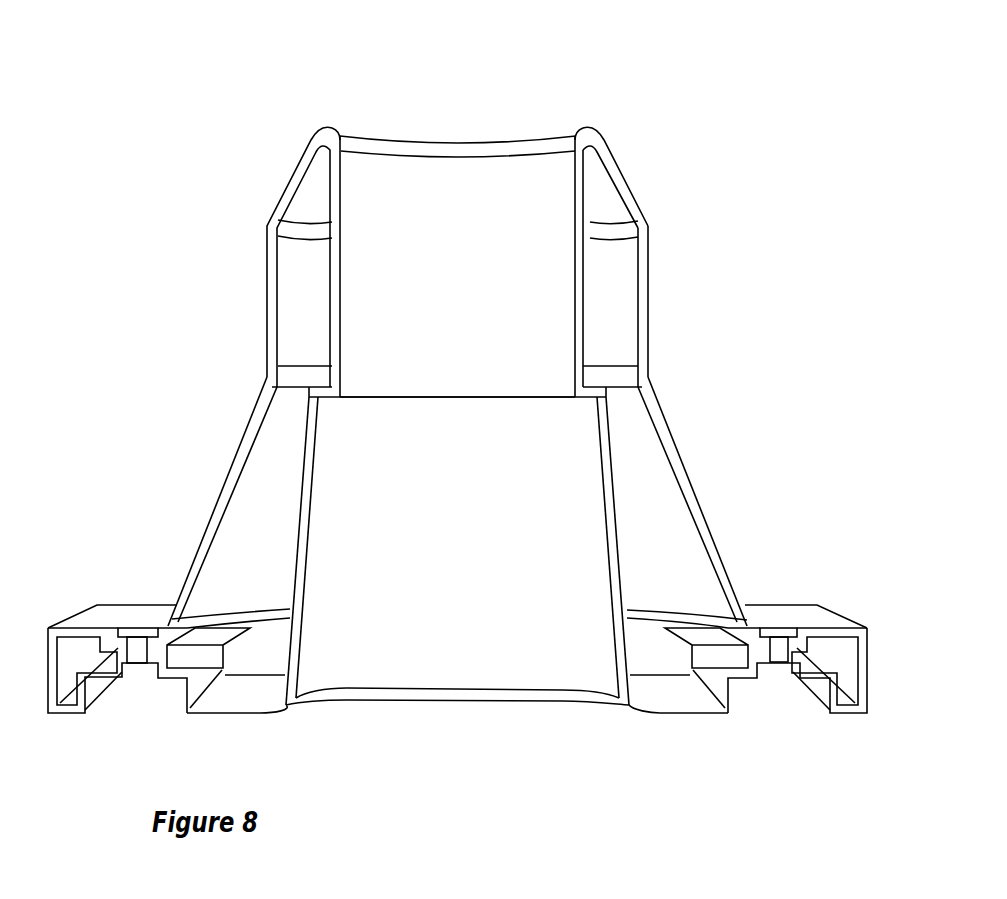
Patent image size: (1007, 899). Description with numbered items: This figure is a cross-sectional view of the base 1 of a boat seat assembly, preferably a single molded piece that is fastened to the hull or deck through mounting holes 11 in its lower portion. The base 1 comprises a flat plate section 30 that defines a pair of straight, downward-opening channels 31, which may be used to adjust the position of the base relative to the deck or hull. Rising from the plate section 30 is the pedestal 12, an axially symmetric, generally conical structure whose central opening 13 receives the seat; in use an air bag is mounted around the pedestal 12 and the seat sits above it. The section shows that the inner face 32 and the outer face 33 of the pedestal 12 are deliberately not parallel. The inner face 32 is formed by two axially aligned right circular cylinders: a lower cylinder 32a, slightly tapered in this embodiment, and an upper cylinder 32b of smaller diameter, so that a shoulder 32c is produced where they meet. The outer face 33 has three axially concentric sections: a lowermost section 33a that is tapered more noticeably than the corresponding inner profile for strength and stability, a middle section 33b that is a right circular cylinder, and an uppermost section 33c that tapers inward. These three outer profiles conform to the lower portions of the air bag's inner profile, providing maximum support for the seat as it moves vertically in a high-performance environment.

The base 1 is at (285, 112).
The mounting holes 11 is at (726, 693).
The pedestal 12 is at (252, 257).
The central opening 13 is at (495, 199).
The plate section 30 is at (150, 599).
The channels 31 is at (160, 697).
The inner face 32 is at (457, 678).
The lower cylinder 32a is at (360, 518).
The upper cylinder 32b is at (360, 210).
The shoulder 32c is at (237, 364).
The outer face 33 is at (674, 268).
The lowermost section 33a is at (722, 501).
The middle section 33b is at (637, 270).
The uppermost section 33c is at (665, 164).